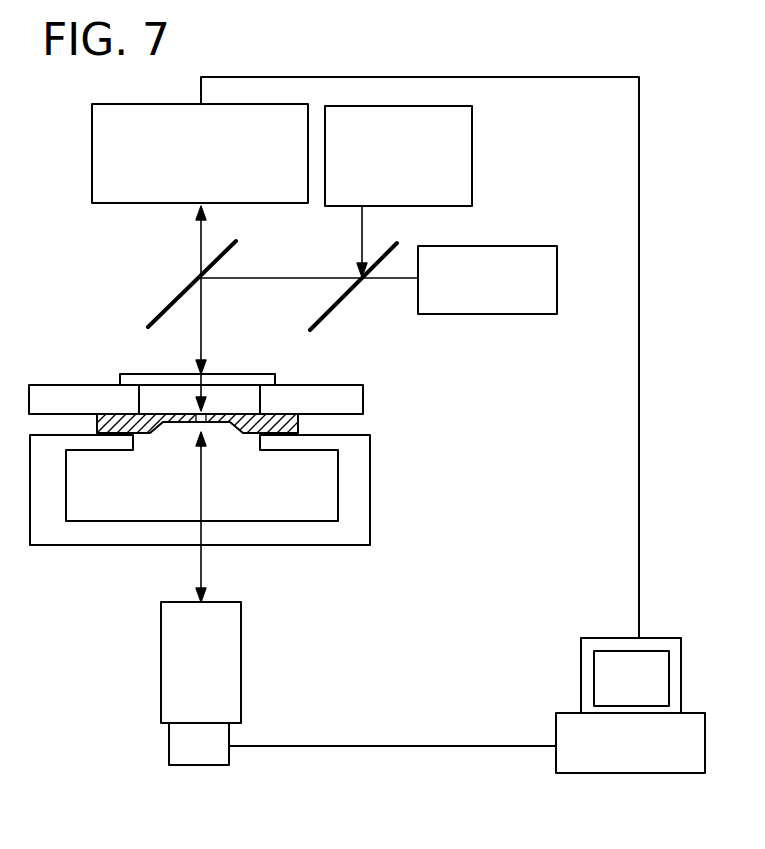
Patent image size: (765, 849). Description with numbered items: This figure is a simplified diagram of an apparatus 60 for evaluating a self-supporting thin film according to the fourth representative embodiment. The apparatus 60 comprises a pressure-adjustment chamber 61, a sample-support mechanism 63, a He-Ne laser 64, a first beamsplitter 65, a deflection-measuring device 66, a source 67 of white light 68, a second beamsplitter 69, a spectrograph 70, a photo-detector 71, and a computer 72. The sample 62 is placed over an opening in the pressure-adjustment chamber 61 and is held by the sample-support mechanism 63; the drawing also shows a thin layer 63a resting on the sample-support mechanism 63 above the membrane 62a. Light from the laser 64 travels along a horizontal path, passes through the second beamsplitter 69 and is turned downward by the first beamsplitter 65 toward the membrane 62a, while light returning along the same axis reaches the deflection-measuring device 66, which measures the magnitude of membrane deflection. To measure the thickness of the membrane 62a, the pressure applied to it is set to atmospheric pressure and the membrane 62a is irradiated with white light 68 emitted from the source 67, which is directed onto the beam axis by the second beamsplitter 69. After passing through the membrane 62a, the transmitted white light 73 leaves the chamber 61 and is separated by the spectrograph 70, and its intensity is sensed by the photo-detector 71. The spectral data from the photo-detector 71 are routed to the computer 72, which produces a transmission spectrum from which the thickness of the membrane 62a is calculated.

The apparatus 60 is at (680, 128).
The pressure-adjustment chamber 61 is at (370, 500).
The sample 62 is at (255, 438).
The membrane 62a is at (187, 424).
The sample-support mechanism 63 is at (353, 400).
The sample film 63a is at (262, 373).
The He-Ne laser 64 is at (503, 305).
The first beamsplitter 65 is at (175, 297).
The deflection-measuring device 66 is at (92, 160).
The source of white light 67 is at (462, 154).
The white light 68 is at (362, 228).
The second beamsplitter 69 is at (343, 302).
The spectrograph 70 is at (223, 663).
The photo-detector 71 is at (170, 748).
The computer 72 is at (617, 762).
The transmitted white light 73 is at (202, 557).